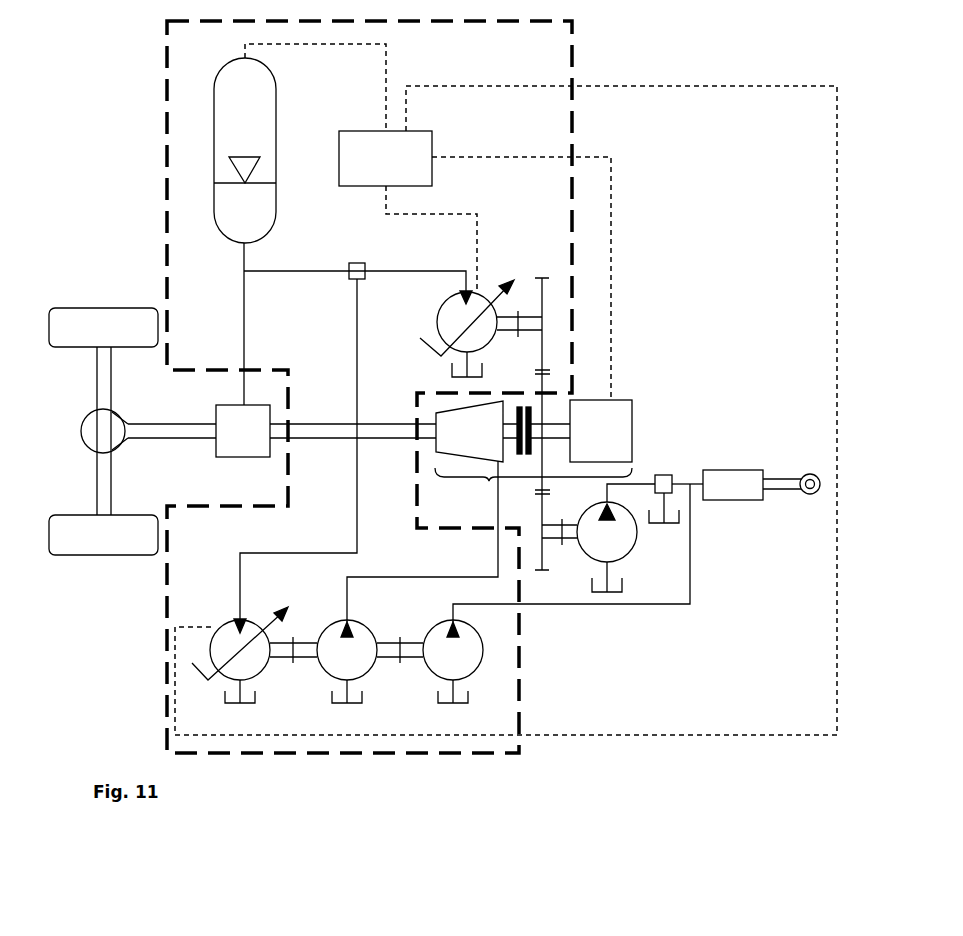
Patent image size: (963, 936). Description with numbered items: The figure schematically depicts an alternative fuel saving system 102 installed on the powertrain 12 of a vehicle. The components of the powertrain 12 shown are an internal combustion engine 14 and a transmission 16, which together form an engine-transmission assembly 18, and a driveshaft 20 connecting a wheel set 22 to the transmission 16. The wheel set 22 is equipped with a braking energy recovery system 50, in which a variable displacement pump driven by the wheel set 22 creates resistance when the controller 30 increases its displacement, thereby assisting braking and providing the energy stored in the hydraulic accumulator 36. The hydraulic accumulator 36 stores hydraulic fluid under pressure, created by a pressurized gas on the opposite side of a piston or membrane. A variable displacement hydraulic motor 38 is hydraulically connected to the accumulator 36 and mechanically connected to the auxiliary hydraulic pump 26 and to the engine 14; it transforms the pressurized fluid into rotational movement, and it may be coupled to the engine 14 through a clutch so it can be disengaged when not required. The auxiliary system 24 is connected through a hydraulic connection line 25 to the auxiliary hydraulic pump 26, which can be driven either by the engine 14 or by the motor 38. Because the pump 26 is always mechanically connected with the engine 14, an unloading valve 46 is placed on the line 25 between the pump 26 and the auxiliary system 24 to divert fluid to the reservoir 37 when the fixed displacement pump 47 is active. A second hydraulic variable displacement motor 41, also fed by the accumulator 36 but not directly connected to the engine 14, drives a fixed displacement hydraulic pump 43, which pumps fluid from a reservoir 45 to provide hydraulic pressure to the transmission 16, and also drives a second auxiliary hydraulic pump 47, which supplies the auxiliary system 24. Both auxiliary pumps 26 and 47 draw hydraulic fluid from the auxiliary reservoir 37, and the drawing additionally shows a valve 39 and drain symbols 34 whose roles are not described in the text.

The fuel saving system 102 is at (582, 128).
The controller 30 is at (428, 222).
The hydraulic accumulator 36 is at (277, 120).
The valve 39 is at (365, 263).
The variable displacement hydraulic motor 38 is at (441, 313).
The reservoir/drain 34 is at (451, 374).
The internal combustion engine 14 is at (620, 400).
The transmission 16 is at (466, 454).
The engine-transmission assembly 18 is at (533, 487).
The powertrain 12 is at (389, 452).
The driveshaft 20 is at (345, 443).
The braking energy recovery system 50 is at (243, 458).
The wheel set 22 is at (73, 513).
The second hydraulic variable displacement motor 41 is at (249, 621).
The fixed displacement hydraulic pump 43 is at (340, 622).
The reservoir 45 is at (345, 704).
The second auxiliary hydraulic pump 47 is at (431, 622).
The auxiliary hydraulic pump 26 is at (624, 557).
The hydraulic connection line 25 is at (633, 482).
The unloading valve 46 is at (672, 476).
The auxiliary reservoir 37 is at (681, 521).
The auxiliary system 24 is at (755, 501).